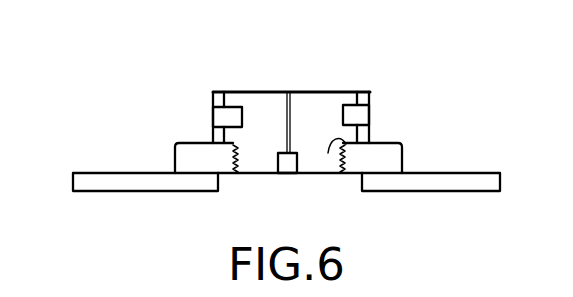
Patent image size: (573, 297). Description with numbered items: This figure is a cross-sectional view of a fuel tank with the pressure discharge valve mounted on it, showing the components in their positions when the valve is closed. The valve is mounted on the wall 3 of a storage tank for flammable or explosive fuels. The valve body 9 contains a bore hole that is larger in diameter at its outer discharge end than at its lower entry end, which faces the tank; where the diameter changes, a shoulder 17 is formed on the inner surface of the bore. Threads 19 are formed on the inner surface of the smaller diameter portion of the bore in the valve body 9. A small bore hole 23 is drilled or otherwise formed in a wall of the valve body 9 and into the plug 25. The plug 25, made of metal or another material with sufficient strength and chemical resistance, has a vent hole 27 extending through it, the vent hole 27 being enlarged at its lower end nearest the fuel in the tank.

The wall 3 is at (102, 180).
The valve body 9 is at (369, 92).
The shoulder 17 is at (233, 157).
The threads 19 is at (370, 142).
The small bore hole 23 is at (221, 92).
The plug 25 is at (257, 115).
The vent hole 27 is at (292, 100).